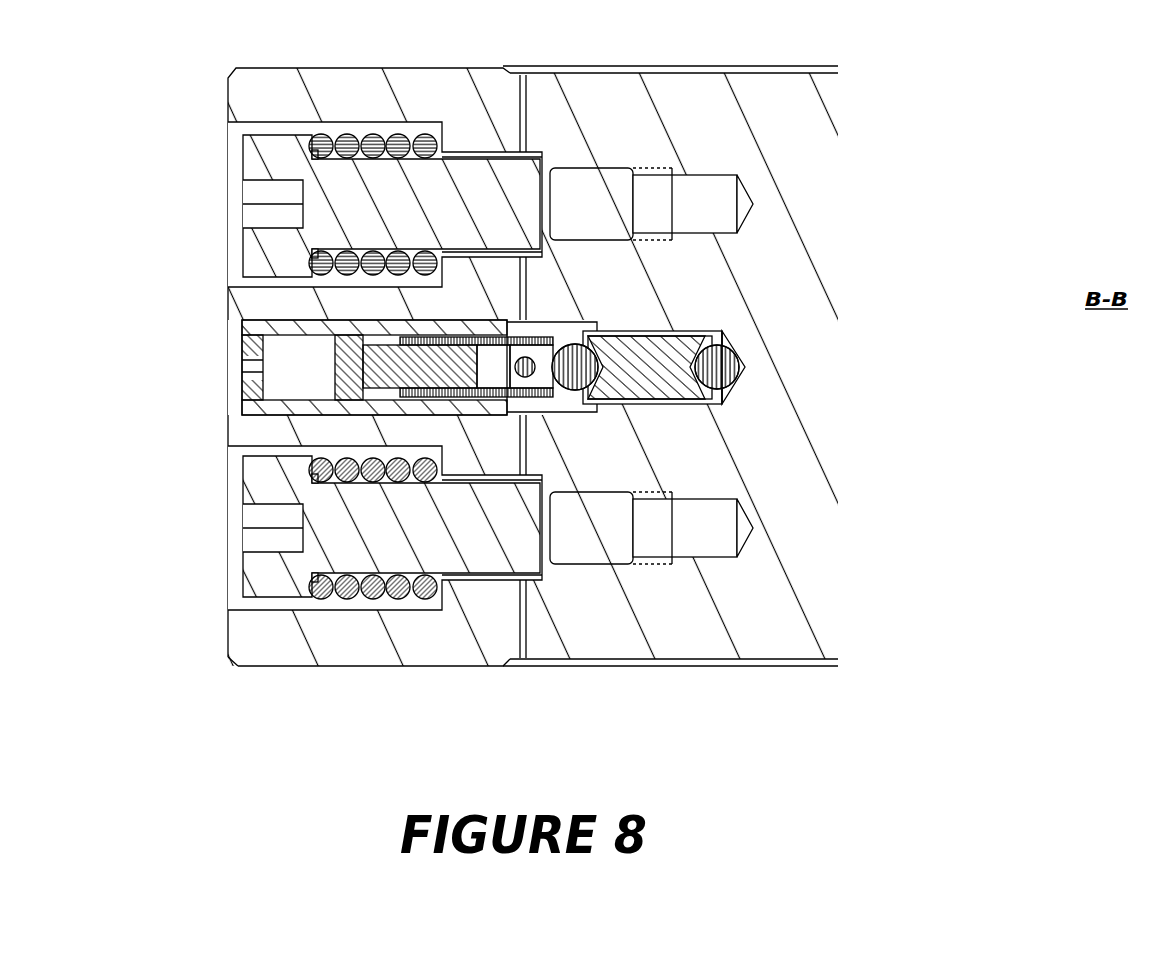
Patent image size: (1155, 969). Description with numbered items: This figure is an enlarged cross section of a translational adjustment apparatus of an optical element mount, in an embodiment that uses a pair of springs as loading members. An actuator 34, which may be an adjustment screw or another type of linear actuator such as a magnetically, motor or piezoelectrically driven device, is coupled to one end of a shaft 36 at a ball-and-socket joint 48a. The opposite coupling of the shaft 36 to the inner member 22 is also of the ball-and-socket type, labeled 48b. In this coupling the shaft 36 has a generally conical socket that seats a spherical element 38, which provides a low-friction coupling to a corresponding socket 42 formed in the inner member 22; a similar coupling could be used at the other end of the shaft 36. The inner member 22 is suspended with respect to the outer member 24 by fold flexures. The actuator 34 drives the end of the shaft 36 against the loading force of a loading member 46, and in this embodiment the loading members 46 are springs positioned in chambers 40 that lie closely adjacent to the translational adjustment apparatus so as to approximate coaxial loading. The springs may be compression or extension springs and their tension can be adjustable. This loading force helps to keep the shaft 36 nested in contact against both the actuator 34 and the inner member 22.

The inner member 22 is at (825, 66).
The outer member 24 is at (412, 68).
The actuator 34 is at (335, 365).
The shaft 36 is at (653, 333).
The spherical element 38 is at (740, 378).
The chambers 40 is at (233, 160).
The socket 42 is at (735, 347).
The loading member 46 is at (352, 162).
The ball-and-socket joint 48a is at (585, 412).
The ball-and-socket coupling 48b is at (742, 418).